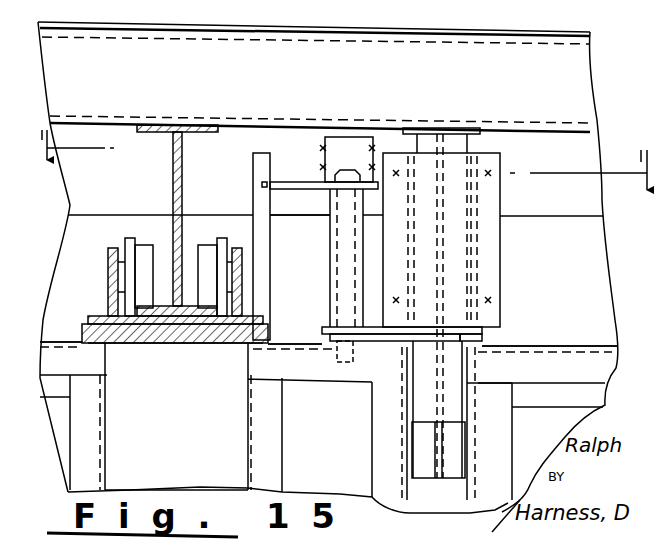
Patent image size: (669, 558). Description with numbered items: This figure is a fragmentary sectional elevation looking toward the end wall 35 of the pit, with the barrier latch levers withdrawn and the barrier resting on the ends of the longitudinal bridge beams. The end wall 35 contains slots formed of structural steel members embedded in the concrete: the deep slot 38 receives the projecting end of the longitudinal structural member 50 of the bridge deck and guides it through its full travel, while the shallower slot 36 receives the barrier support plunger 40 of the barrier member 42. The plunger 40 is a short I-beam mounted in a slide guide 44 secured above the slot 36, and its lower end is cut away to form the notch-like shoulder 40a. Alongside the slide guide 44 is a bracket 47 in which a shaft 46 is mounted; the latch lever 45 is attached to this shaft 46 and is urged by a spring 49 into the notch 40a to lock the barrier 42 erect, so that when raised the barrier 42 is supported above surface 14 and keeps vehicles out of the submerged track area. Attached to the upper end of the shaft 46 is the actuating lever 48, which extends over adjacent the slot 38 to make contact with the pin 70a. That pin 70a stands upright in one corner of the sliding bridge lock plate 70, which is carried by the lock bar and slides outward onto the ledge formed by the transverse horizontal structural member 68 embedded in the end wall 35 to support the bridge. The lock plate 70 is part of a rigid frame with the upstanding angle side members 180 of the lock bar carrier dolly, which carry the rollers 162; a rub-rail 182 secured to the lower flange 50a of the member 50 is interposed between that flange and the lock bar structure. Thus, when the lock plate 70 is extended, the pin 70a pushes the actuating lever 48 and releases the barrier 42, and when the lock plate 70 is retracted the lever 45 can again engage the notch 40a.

The barrier member 42 is at (195, 71).
The bracket 47 is at (357, 142).
The barrier support plunger 40 is at (453, 143).
The actuating lever 48 is at (295, 182).
The longitudinal structural member 50 is at (171, 166).
The upstanding angle side member 180 is at (238, 247).
The roller 162 is at (212, 208).
The surface 14 is at (337, 182).
The slide guide 44 is at (495, 241).
The pin 70a is at (268, 230).
The shaft 46 is at (328, 251).
The latch lever 45 is at (323, 308).
The transverse horizontal structural metal member 68 is at (55, 337).
The spring 49 is at (387, 336).
The rub-rail 182 is at (143, 330).
The sliding bridge lock plate 70 is at (224, 344).
The lower flange 50a is at (162, 302).
The slot 38 is at (247, 442).
The notch-like shoulder 40a is at (428, 428).
The slot 36 is at (412, 497).
The end wall 35 is at (495, 431).